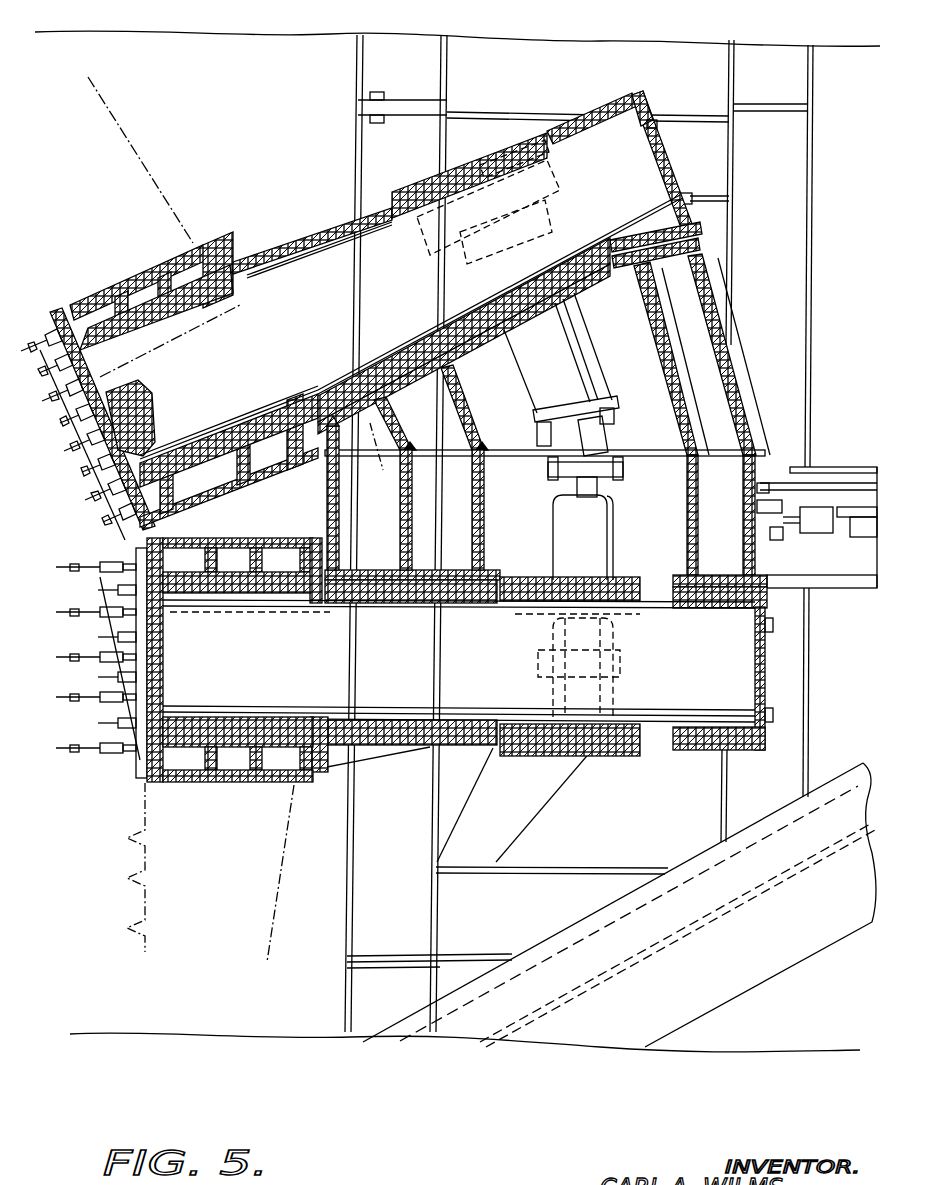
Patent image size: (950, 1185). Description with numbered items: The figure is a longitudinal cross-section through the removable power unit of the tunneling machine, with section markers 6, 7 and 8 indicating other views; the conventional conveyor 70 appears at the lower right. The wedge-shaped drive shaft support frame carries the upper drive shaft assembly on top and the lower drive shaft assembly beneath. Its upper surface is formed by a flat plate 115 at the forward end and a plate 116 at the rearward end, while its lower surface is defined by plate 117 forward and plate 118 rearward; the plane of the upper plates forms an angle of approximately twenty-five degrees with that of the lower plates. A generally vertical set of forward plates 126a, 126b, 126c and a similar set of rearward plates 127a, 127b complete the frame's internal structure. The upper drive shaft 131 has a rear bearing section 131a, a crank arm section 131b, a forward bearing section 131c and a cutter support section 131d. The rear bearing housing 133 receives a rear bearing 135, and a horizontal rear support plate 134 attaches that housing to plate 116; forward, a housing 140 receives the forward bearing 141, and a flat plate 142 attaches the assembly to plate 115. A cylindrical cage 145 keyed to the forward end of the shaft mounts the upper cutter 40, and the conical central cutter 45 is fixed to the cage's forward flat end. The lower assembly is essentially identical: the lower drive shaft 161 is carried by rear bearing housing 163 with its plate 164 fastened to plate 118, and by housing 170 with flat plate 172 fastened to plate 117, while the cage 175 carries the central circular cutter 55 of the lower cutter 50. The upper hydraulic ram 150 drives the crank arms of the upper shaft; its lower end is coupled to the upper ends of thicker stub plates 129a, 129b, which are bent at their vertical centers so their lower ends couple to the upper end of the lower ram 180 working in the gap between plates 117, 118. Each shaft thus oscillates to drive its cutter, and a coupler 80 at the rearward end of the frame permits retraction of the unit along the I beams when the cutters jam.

The upper cutter 40 is at (100, 88).
The central cutter 45 is at (58, 478).
The lower cutter 50 is at (130, 856).
The central circular cutter 55 is at (88, 717).
The conveyor 70 is at (782, 947).
The coupler 80 is at (810, 507).
The flat plate 115 is at (405, 375).
The plate 116 is at (700, 246).
The plate 117 is at (460, 603).
The plate 118 is at (713, 575).
The forward plate 126a is at (325, 516).
The forward plate 126b is at (400, 525).
The forward plate 126c is at (472, 527).
The rearward plate 127a is at (652, 308).
The rearward plate 127b is at (715, 362).
The stub plate 129a is at (550, 432).
The stub plate 129b is at (610, 418).
The upper drive shaft 131 is at (357, 227).
The rear bearing section 131a is at (520, 175).
The crank arm section 131b is at (514, 202).
The forward bearing section 131c is at (368, 292).
The cutter support section 131d is at (193, 375).
The rear bearing housing 133 is at (590, 108).
The horizontal rear support plate 134 is at (686, 262).
The rear bearing 135 is at (593, 110).
The housing 140 is at (262, 266).
The forward bearing 141 is at (300, 298).
The flat plate 142 is at (320, 373).
The cylindrical cage 145 is at (90, 296).
The upper hydraulic ram 150 is at (590, 333).
The lower drive shaft 161 is at (403, 695).
The rear bearing housing 163 is at (693, 745).
The rear support plate 164 is at (740, 592).
The housing 170 is at (472, 745).
The flat plate 172 is at (378, 598).
The cage 175 is at (240, 784).
The ram 180 is at (613, 545).
The section line 6- 6 is at (487, 70).
The section line 7- 7 is at (676, 79).
The section line 8- 8 is at (192, 157).